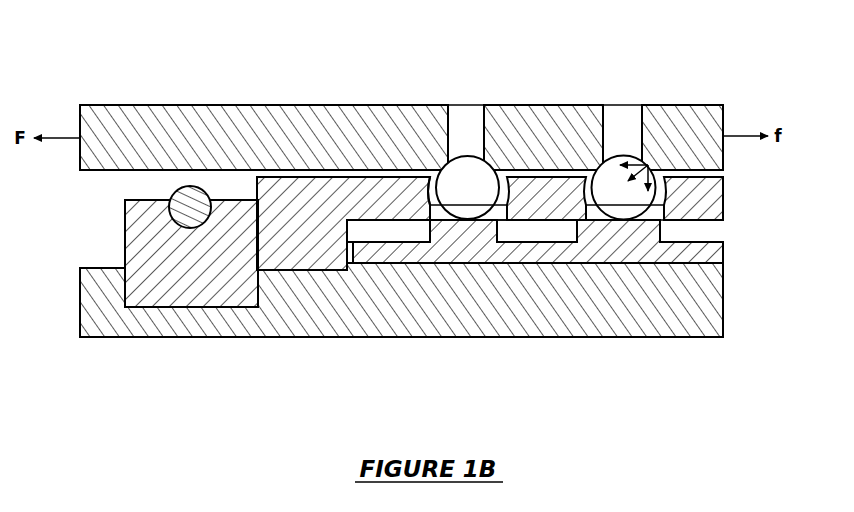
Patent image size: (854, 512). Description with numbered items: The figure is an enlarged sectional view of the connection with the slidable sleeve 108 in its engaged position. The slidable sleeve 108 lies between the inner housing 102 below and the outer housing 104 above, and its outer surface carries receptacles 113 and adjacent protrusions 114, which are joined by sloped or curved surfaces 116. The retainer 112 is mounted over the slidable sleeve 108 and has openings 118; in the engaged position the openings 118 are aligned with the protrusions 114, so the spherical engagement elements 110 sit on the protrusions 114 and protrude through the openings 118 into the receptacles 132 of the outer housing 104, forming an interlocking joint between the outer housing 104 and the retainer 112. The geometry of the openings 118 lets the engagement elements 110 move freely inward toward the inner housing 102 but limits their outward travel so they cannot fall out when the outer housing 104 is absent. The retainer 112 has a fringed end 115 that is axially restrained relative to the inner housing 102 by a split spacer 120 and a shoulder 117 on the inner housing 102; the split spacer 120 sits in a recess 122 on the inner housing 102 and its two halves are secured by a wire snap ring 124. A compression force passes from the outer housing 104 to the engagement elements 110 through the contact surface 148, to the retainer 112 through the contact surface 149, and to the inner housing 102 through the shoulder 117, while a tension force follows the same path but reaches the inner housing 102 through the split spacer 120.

The inner housing 102 is at (347, 338).
The outer housing 104 is at (178, 106).
The slidable sleeve 108 is at (724, 254).
The engagement elements 110 is at (624, 156).
The retainer 112 is at (350, 185).
The receptacles 113 is at (408, 232).
The protrusions 114 is at (473, 213).
The fringed end 115 is at (298, 264).
The sloped or curved surfaces 116 is at (586, 222).
The shoulder 117 is at (350, 264).
The openings 118 is at (423, 190).
The split spacer 120 is at (132, 238).
The recess 122 is at (185, 308).
The wire snap ring 124 is at (206, 190).
The receptacles 132 is at (469, 156).
The contact surface 148 is at (648, 166).
The contact surface 149 is at (656, 178).